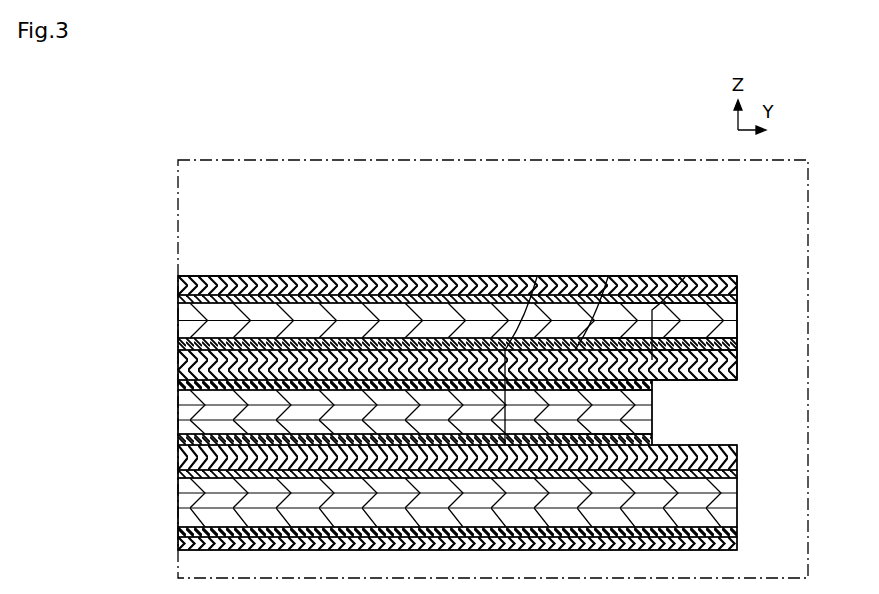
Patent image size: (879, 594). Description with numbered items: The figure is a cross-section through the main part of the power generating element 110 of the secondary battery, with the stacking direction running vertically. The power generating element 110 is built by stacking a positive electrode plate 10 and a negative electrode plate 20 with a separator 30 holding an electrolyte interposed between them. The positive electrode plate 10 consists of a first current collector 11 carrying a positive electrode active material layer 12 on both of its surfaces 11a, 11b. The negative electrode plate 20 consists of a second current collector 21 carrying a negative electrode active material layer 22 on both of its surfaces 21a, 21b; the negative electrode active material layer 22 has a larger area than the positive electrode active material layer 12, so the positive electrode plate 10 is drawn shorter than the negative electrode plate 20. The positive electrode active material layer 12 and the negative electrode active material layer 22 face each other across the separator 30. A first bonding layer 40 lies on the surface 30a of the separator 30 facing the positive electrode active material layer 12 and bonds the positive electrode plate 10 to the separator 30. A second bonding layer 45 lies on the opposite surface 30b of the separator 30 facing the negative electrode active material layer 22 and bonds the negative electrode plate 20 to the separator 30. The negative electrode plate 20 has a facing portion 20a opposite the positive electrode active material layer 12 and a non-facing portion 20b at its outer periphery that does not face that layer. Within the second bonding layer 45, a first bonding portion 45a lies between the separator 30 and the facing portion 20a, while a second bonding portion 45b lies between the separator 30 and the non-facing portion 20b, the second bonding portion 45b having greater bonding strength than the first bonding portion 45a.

The power generating element 110 is at (117, 88).
The separator 30 is at (178, 277).
The negative electrode plate 20 is at (403, 407).
The negative electrode active material layer 22 is at (178, 299).
The second current collector 21 is at (426, 415).
The positive electrode plate 10 is at (361, 427).
The positive electrode active material layer 12 is at (178, 395).
The first current collector 11 is at (178, 420).
The facing portion 20a is at (386, 277).
The non-facing portion 20b is at (737, 277).
The surface of second current collector 21a is at (737, 318).
The surface of second current collector 21b is at (737, 340).
The surface of separator facing positive electrode active material layer 30a is at (737, 362).
The surface of separator facing negative electrode active material layer 30b is at (737, 379).
The surface of first current collector 11a is at (652, 396).
The surface of first current collector 11b is at (652, 433).
The first bonding layer 40 is at (516, 277).
The second bonding layer 45 is at (638, 272).
The first bonding portion 45a is at (588, 277).
The second bonding portion 45b is at (675, 292).